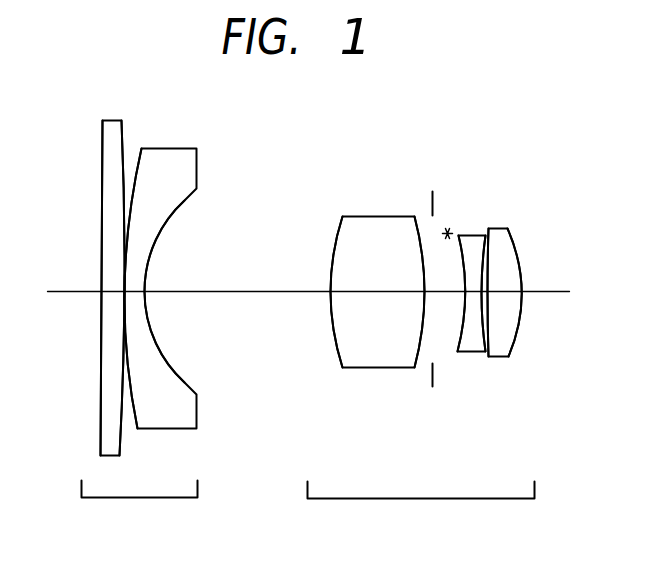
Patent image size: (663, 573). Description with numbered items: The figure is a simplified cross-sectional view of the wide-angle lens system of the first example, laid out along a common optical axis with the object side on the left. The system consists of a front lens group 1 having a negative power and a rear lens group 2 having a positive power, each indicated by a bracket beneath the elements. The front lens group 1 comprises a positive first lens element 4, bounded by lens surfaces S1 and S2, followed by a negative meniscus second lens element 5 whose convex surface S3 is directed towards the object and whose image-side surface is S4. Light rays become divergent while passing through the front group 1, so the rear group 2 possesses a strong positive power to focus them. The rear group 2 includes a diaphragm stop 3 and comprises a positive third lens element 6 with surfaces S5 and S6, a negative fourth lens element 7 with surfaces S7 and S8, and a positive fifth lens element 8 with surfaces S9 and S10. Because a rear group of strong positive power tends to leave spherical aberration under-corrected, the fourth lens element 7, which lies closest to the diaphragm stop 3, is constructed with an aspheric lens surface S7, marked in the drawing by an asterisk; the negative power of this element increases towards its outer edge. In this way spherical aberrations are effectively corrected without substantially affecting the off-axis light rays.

The front lens group 1 is at (140, 499).
The rear lens group 2 is at (425, 500).
The diaphragm stop 3 is at (435, 194).
The first lens element 4 is at (119, 122).
The second lens element 5 is at (186, 150).
The third lens element 6 is at (356, 218).
The fourth lens element 7 is at (478, 237).
The fifth lens element 8 is at (513, 238).
The first lens surface S1 is at (103, 440).
The second lens surface S2 is at (121, 440).
The third lens surface S3 is at (137, 407).
The fourth lens surface S4 is at (183, 382).
The fifth lens surface S5 is at (341, 353).
The sixth lens surface S6 is at (417, 353).
The aspheric lens surface S7 is at (462, 333).
The eighth lens surface S8 is at (482, 340).
The ninth lens surface S9 is at (489, 345).
The tenth lens surface S10 is at (518, 328).